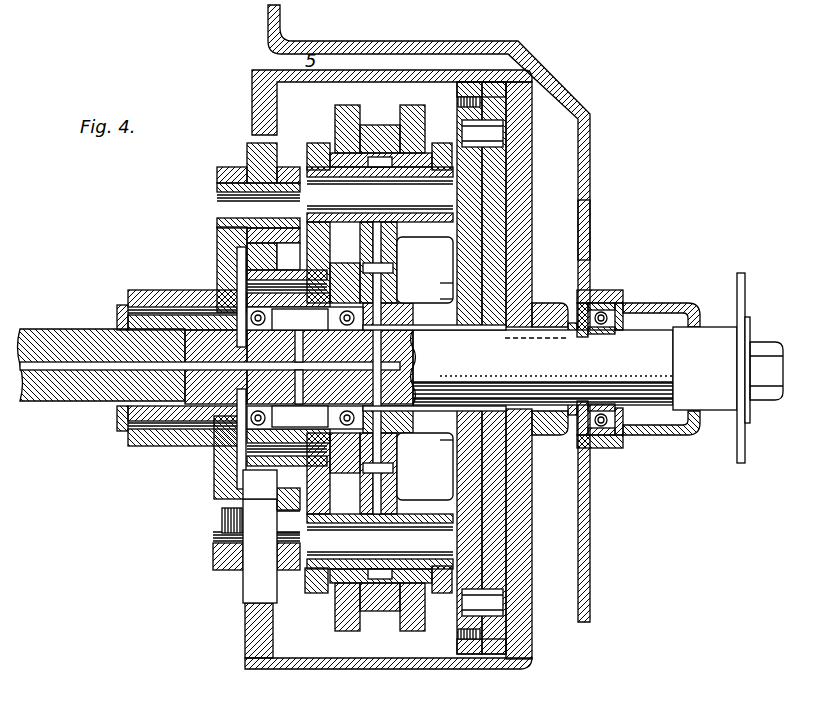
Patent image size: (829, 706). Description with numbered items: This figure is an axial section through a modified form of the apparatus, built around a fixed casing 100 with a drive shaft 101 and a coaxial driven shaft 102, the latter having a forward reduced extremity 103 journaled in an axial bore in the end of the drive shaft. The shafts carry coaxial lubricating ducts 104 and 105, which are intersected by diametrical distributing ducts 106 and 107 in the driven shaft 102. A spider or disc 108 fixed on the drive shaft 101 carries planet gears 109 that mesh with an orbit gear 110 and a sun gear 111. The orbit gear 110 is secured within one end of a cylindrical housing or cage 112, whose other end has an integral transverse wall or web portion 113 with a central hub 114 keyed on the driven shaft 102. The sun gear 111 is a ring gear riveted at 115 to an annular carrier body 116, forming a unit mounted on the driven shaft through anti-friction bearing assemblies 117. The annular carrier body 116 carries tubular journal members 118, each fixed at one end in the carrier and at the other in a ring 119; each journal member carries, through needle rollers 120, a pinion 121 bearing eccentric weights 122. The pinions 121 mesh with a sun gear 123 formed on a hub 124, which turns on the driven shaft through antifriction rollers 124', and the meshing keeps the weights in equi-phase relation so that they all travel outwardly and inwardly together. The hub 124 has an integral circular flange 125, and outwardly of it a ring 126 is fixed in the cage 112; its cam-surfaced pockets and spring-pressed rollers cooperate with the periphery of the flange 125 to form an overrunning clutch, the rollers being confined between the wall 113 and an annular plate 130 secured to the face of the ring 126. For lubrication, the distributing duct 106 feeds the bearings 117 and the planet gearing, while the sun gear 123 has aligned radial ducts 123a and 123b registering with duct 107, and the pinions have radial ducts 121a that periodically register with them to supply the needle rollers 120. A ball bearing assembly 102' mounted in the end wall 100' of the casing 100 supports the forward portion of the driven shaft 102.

The fixed casing 100 is at (437, 313).
The end wall 100' is at (606, 230).
The drive shaft 101 is at (100, 393).
The driven shaft 102 is at (705, 373).
The ball bearing assembly 102' is at (638, 365).
The forward reduced extremity 103 is at (203, 377).
The lubricating duct 104 is at (53, 366).
The lubricating duct 105 is at (418, 366).
The distributing duct 106 is at (376, 436).
The distributing duct 107 is at (430, 380).
The spider or disc 108 is at (217, 243).
The planet gear 109 is at (247, 165).
The orbit gear 110 is at (263, 592).
The sun gear 111 is at (247, 272).
The housing or cage 112 is at (392, 72).
The transverse wall or web portion 113 is at (523, 150).
The central hub 114 is at (547, 302).
The rivets 115 is at (325, 290).
The annular carrier body 116 is at (320, 143).
The anti-friction bearing assemblies 117 is at (376, 301).
The tubular journal member 118 is at (480, 170).
The ring 119 is at (442, 143).
The needle rollers 120 is at (402, 215).
The pinion 121 is at (398, 262).
The radial duct 121a is at (425, 466).
The eccentric weights 122 is at (415, 110).
The sun gear 123 is at (427, 275).
The radial duct 123a is at (426, 292).
The radial duct 123b is at (426, 442).
The hub 124 is at (578, 366).
The antifriction rollers 124' is at (531, 348).
The circular flange 125 is at (497, 218).
The ring 126 is at (493, 80).
The annular plate 130 is at (448, 84).